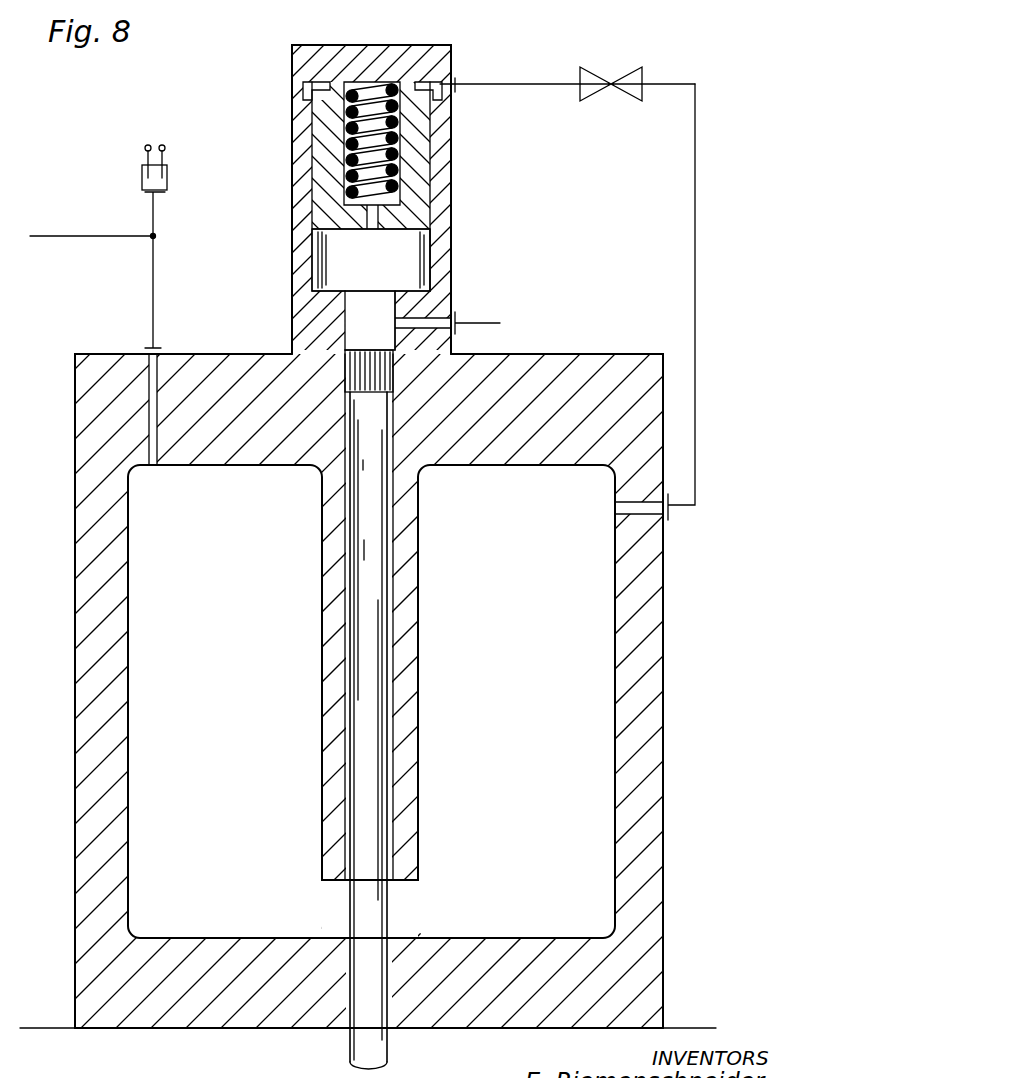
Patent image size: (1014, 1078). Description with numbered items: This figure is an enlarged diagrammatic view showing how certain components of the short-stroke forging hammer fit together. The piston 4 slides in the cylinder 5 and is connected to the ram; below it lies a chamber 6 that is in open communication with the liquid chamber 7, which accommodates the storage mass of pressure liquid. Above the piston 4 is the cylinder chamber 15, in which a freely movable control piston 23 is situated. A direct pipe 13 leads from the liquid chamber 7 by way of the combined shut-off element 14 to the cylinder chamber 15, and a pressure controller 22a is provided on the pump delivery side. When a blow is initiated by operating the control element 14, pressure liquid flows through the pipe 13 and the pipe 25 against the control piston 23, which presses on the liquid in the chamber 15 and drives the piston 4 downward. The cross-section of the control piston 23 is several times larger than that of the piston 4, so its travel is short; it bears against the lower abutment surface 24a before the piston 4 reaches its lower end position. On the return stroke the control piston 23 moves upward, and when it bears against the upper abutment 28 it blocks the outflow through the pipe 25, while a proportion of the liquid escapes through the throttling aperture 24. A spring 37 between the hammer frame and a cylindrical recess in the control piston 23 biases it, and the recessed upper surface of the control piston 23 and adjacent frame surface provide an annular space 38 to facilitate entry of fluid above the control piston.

The piston 4 is at (385, 372).
The cylinder 5 is at (410, 624).
The chamber 6 is at (388, 670).
The chamber 7 is at (595, 661).
The pipe 13 is at (696, 270).
The shut-off element 14 is at (628, 94).
The cylinder chamber 15 is at (357, 320).
The pressure controller 22a is at (167, 179).
The piston 23 is at (430, 170).
The throttling aperture 24 is at (373, 212).
The lower abutment surface 24a is at (422, 275).
The pipe 25 is at (515, 80).
The upper abutment 28 is at (344, 90).
The spring 37 is at (346, 133).
The annular space 38 is at (442, 100).